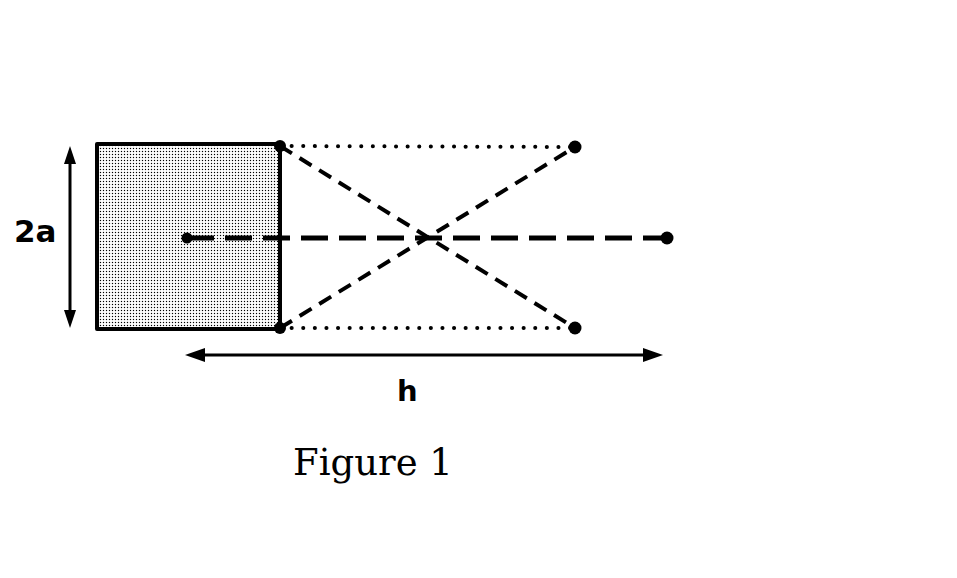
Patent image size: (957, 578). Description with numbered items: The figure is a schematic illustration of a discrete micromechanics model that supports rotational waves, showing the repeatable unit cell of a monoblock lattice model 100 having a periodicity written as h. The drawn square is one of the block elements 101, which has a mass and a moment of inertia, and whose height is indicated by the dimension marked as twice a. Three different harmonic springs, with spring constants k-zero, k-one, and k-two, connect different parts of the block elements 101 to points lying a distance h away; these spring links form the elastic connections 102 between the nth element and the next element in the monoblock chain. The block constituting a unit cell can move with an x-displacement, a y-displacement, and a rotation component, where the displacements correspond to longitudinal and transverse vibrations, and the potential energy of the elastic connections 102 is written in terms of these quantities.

The monoblock lattice model 100 is at (637, 117).
The block element 101 is at (173, 140).
The elastic connection 102 is at (553, 170).